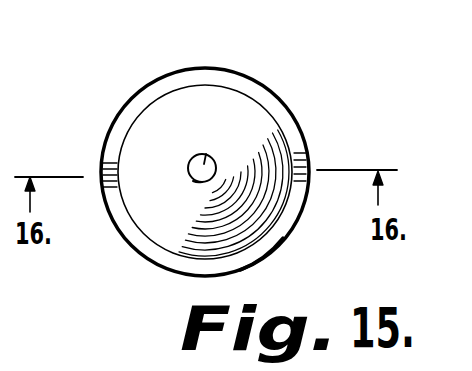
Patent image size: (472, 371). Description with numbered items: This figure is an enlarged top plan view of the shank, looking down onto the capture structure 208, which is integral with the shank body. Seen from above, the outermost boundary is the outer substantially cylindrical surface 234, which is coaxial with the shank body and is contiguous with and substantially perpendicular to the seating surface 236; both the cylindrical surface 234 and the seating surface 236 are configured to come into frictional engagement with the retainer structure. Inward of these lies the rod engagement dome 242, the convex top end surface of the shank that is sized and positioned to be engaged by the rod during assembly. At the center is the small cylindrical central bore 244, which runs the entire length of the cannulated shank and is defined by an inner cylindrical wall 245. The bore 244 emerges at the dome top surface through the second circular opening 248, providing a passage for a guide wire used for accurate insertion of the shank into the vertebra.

The capture structure 208 is at (290, 108).
The seating surface 236 is at (263, 100).
The outer substantially cylindrical surface 234 is at (283, 237).
The central bore 244 is at (214, 171).
The inner cylindrical wall 245 is at (206, 154).
The rod engagement dome 242 is at (171, 233).
The second circular opening 248 is at (196, 181).